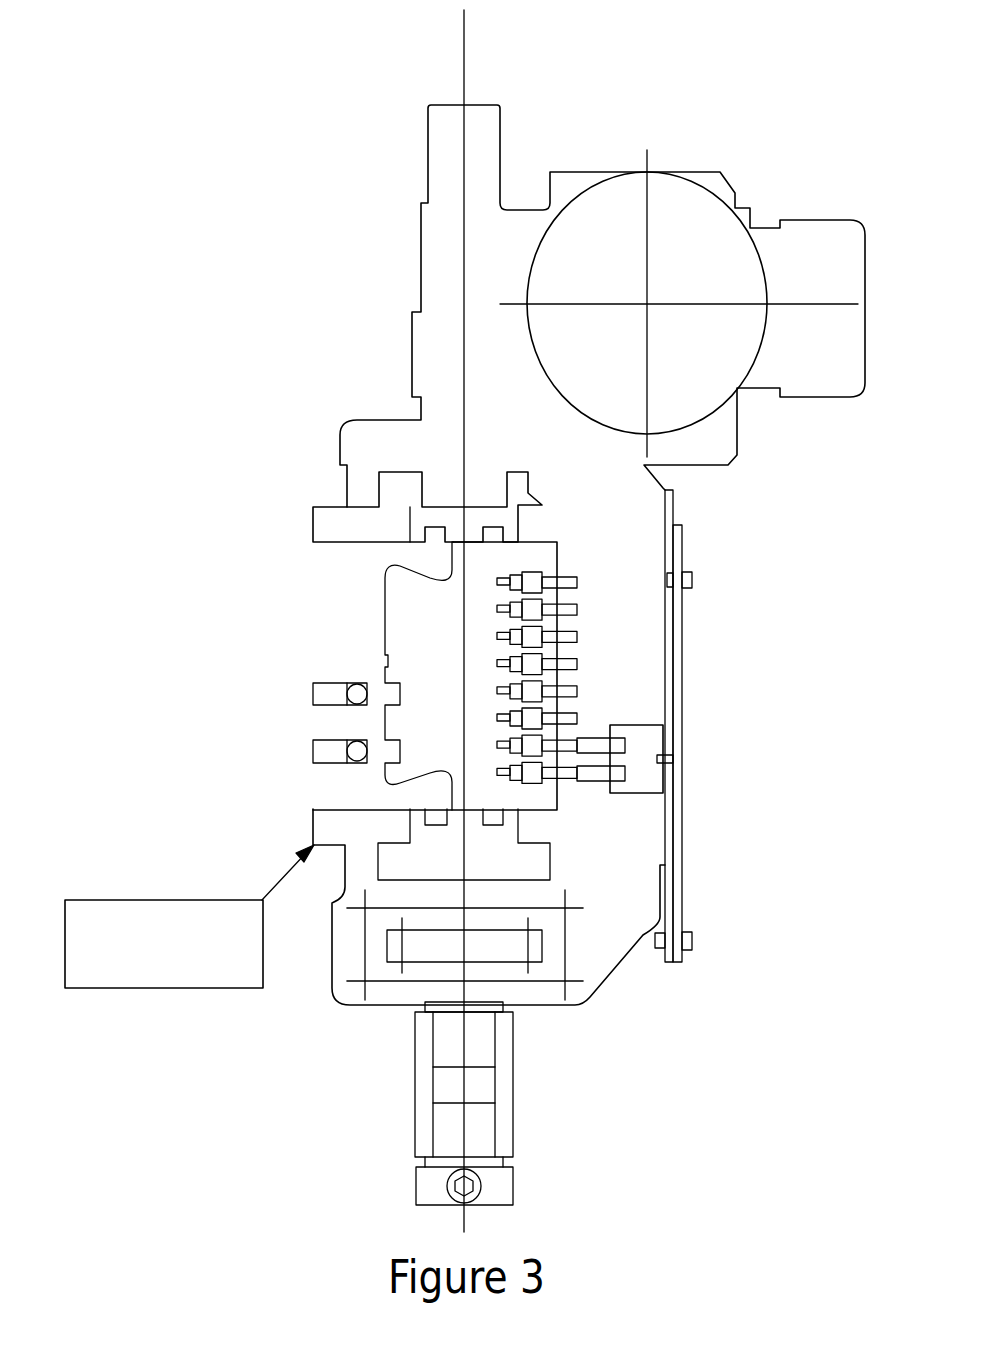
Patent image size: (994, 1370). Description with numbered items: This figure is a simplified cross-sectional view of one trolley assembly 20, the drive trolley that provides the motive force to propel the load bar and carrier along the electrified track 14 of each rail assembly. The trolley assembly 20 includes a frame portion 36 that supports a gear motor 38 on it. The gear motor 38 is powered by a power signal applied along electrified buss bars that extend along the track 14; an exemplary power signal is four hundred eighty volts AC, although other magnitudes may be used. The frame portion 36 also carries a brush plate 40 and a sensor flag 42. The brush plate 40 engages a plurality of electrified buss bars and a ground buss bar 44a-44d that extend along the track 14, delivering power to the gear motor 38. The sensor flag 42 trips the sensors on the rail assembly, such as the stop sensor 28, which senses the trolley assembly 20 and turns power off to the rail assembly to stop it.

The trolley assembly 20 is at (328, 242).
The electrified track 14 is at (378, 622).
The second switch or sensor 28 is at (312, 720).
The frame portion 36 is at (483, 400).
The gear motor 38 is at (680, 190).
The brush plate 40 is at (583, 778).
The sensor flag 42 is at (313, 808).
The electrified buss bars and ground buss bar 44a-44d is at (487, 712).